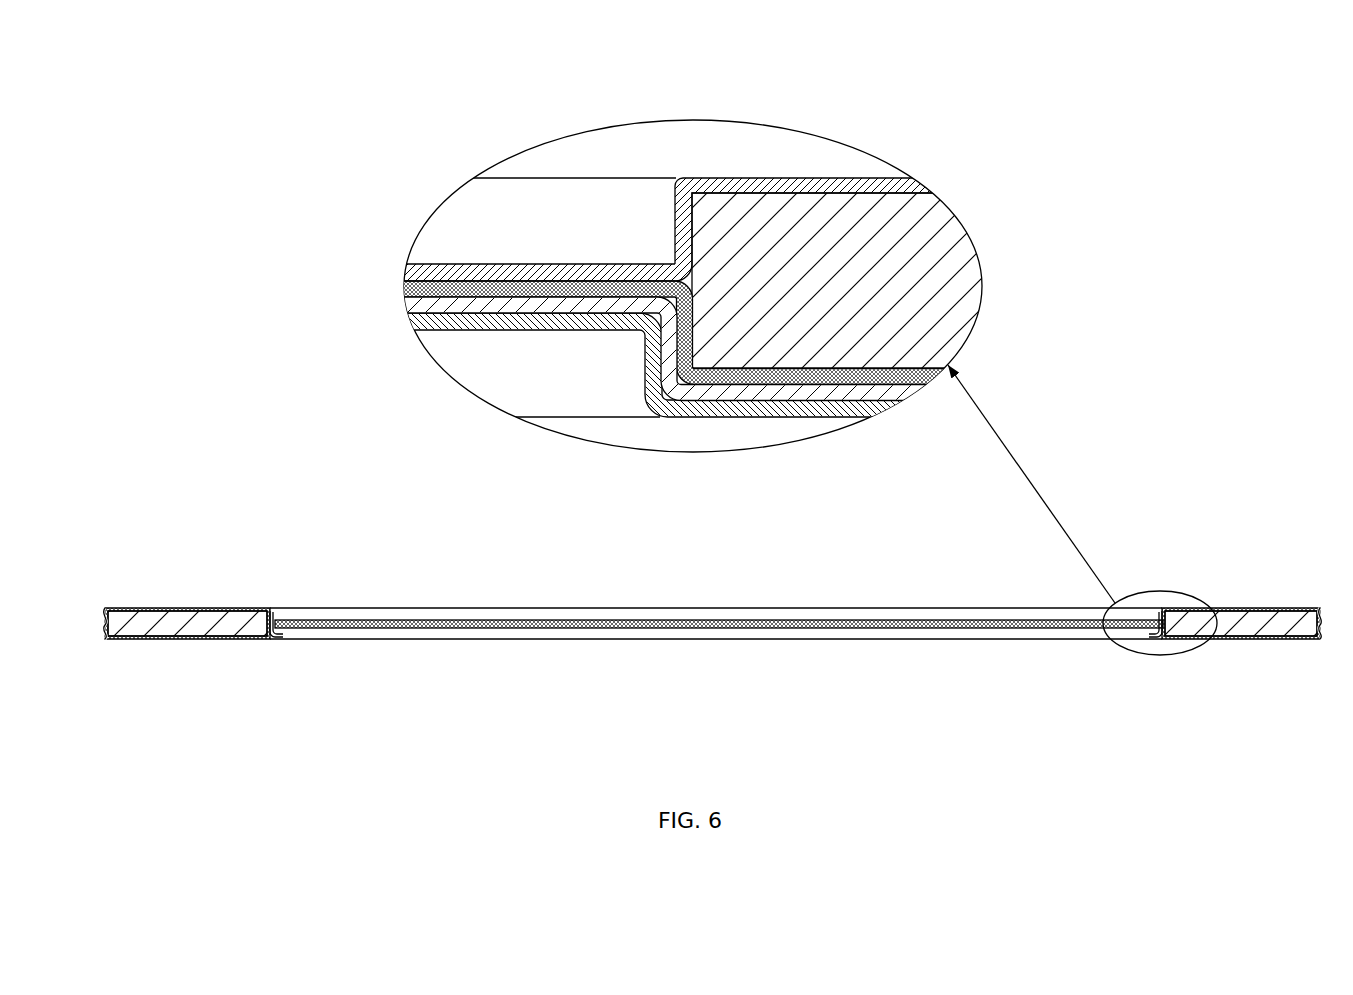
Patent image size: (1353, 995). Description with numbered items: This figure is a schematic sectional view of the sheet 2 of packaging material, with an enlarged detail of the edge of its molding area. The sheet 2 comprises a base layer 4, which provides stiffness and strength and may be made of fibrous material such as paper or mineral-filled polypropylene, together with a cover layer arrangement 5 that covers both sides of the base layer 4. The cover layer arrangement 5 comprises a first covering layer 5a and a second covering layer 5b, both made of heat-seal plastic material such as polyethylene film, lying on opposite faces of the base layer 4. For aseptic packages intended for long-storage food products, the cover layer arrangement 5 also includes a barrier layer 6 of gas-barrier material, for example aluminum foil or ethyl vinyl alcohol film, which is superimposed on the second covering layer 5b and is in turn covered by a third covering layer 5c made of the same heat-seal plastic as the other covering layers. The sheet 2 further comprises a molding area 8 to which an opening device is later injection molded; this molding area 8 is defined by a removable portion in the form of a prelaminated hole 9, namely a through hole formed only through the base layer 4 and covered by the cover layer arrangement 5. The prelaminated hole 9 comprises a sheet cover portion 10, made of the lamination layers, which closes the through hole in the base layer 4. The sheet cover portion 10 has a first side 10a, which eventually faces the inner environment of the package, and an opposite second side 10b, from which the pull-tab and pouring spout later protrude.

The sheet 2 is at (1275, 627).
The base layer 4 is at (967, 257).
The cover layer arrangement 5 is at (690, 281).
The first covering layer 5a is at (790, 188).
The second covering layer 5b is at (907, 378).
The third covering layer 5c is at (803, 410).
The barrier layer 6 is at (868, 393).
The molding area 8 is at (388, 580).
The prelaminated hole 9 is at (497, 235).
The sheet cover portion 10 is at (719, 393).
The first side 10a is at (515, 332).
The second side 10b is at (598, 262).